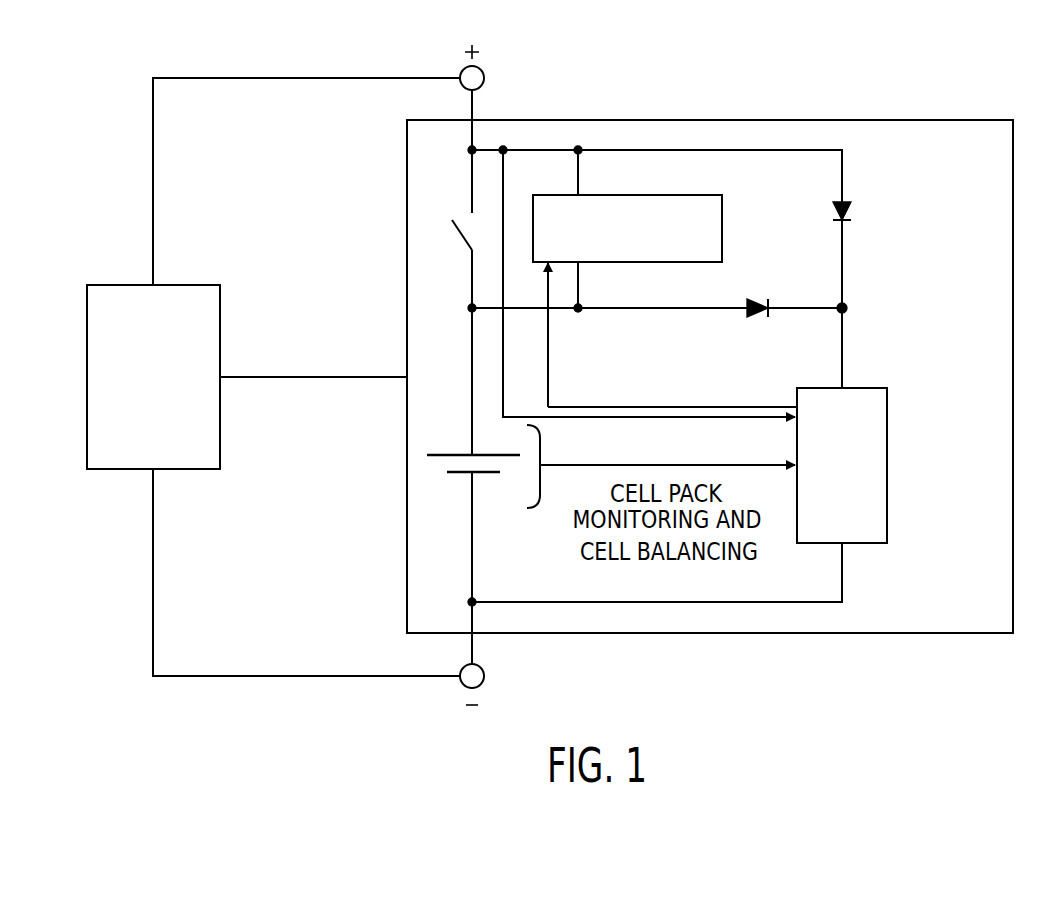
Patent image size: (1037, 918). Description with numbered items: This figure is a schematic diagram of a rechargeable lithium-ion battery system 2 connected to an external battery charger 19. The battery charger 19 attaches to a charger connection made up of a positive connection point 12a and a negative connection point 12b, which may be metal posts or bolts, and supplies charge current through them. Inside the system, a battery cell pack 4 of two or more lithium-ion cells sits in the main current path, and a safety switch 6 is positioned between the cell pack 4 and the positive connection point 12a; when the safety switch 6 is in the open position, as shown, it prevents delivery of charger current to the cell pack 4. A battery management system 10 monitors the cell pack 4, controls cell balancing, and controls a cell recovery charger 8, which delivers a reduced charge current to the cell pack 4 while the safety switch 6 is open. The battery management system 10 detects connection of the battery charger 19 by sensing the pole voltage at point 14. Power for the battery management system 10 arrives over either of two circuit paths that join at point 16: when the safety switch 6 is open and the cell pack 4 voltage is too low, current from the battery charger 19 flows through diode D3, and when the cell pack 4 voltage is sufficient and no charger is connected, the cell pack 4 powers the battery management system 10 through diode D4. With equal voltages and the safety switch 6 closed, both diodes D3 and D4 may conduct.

The LI battery system 2 is at (767, 120).
The battery cell pack 4 is at (488, 484).
The safety switch 6 is at (476, 230).
The cell recovery charger 8 is at (627, 195).
The battery management system 10 is at (887, 466).
The positive connection point 12a is at (485, 78).
The negative connection point 12b is at (485, 676).
The point 14 is at (503, 145).
The point 16 is at (838, 305).
The battery charger 19 is at (87, 375).
The diode D3 is at (861, 212).
The diode D4 is at (759, 291).